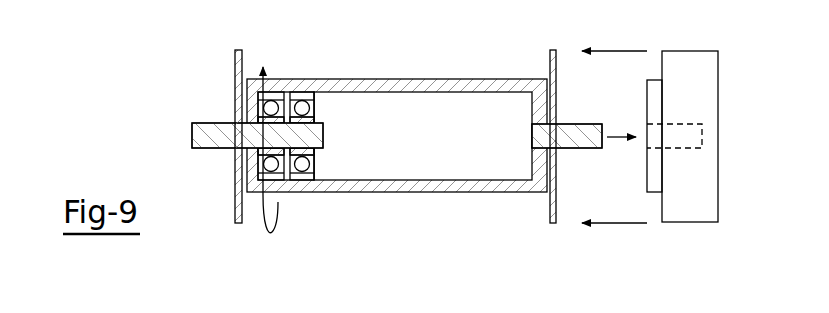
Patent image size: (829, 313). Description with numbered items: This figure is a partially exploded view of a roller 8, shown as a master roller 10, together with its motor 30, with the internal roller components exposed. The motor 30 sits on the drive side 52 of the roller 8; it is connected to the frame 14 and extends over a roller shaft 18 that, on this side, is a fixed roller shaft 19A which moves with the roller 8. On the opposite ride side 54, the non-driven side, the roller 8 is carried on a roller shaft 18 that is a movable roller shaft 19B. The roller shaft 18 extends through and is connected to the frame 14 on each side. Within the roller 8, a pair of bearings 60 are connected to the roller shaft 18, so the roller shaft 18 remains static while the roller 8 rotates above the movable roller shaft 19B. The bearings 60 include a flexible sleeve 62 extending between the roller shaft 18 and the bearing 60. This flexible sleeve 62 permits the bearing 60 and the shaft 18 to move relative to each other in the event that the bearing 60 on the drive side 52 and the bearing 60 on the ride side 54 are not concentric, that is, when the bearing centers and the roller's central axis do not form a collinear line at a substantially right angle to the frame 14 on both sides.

The roller 8 is at (397, 98).
The master roller 10 is at (367, 66).
The frame 14 is at (235, 58).
The roller shaft 18 is at (381, 142).
The fixed roller shaft 19A is at (593, 143).
The movable roller shaft 19B is at (198, 135).
The motor 30 is at (700, 90).
The drive side 52 is at (566, 243).
The ride side 54 is at (227, 242).
The bearings 60 is at (304, 82).
The flexible sleeve 62 is at (268, 124).